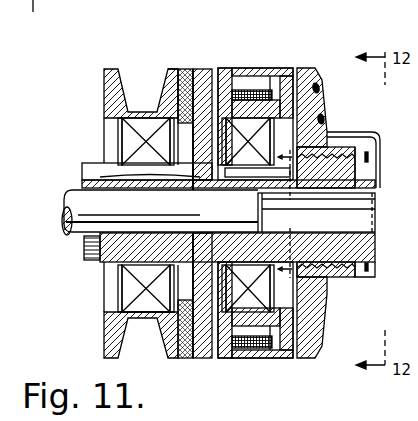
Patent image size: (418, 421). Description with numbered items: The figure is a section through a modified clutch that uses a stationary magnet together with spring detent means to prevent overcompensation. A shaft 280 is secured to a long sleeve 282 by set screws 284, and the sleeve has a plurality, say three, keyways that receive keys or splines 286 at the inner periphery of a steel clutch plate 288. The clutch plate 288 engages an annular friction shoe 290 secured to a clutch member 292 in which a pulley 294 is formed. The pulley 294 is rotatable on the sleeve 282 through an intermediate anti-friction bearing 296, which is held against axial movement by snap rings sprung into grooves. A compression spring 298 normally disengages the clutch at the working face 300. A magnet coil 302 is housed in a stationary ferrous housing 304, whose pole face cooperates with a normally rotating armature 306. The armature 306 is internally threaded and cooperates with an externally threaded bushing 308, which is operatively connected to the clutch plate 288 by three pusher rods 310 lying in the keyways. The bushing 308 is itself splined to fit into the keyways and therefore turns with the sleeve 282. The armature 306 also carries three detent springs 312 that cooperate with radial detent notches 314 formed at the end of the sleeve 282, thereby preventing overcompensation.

The shaft 280 is at (72, 234).
The long sleeve 282 is at (130, 250).
The set screws 284 is at (88, 258).
The keys or splines 286 is at (130, 174).
The clutch plate 288 is at (213, 68).
The annular friction shoe 290 is at (185, 68).
The clutch member 292 is at (170, 68).
The pulley 294 is at (113, 68).
The anti-friction bearing 296 is at (128, 135).
The compression spring 298 is at (175, 272).
The working face 300 is at (196, 68).
The magnet coil 302 is at (270, 82).
The ferrous housing 304 is at (258, 68).
The armature 306 is at (313, 70).
The threaded bushing 308 is at (340, 175).
The pusher rods 310 is at (264, 178).
The detent springs 312 is at (340, 132).
The radial detent notches 314 is at (372, 195).